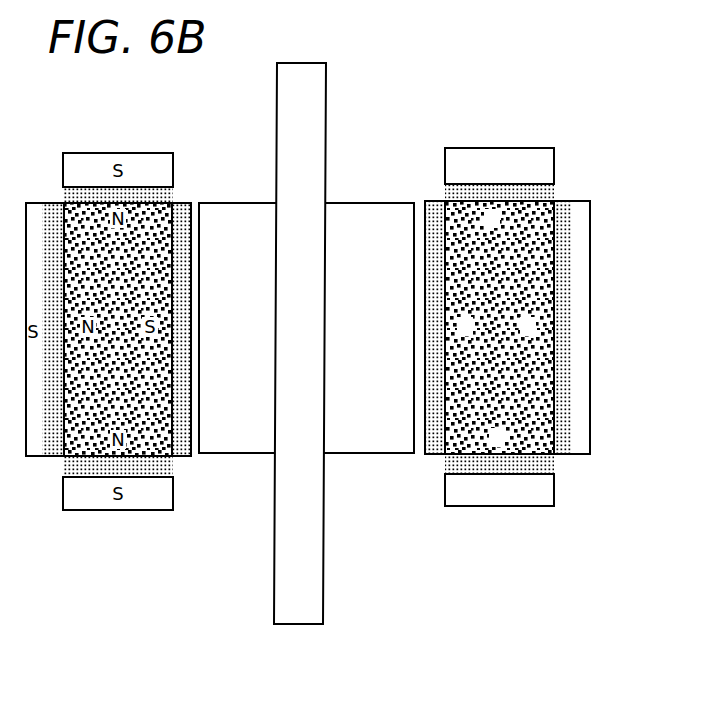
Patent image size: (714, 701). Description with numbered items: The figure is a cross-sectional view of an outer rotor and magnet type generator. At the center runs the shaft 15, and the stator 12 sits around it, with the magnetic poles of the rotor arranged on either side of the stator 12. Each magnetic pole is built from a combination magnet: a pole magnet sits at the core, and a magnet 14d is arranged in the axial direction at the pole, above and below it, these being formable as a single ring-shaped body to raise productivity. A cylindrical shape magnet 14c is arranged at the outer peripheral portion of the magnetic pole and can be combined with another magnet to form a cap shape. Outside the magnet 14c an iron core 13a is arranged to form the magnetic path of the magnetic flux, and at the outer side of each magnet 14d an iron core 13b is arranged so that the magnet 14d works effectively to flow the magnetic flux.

The stator 12 is at (240, 442).
The shaft 15 is at (283, 158).
The iron core 13a is at (578, 353).
The iron core 13b is at (465, 165).
The cylindrical shape magnet 14c is at (572, 413).
The magnet 14d is at (557, 188).